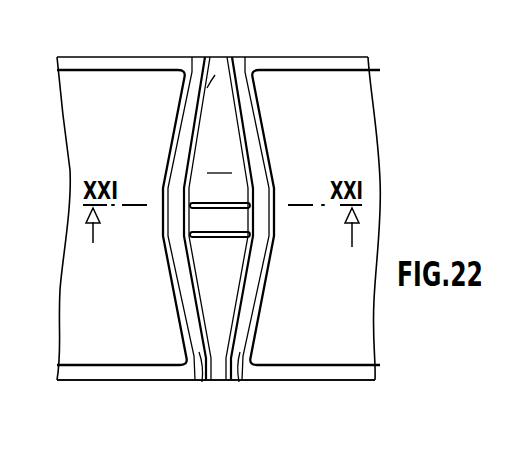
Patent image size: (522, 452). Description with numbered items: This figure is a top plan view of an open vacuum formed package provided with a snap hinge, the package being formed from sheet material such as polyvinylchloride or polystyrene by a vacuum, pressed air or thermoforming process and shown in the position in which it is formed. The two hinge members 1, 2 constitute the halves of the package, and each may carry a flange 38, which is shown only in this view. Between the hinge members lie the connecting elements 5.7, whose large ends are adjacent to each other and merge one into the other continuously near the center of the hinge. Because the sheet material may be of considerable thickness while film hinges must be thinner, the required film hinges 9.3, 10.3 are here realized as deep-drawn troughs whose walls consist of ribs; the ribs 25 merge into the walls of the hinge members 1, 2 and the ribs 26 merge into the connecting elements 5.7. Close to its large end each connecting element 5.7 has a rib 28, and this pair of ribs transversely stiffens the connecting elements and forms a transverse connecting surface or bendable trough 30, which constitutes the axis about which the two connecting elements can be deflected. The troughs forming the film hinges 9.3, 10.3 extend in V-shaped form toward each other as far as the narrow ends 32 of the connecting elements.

The hinge member 1 is at (128, 88).
The hinge member 2 is at (337, 82).
The rib 25 is at (263, 126).
The rib 26 is at (236, 72).
The narrow end 32 is at (215, 75).
The connecting element 5.7 is at (219, 161).
The rib 28 is at (236, 204).
The bendable trough 30 is at (242, 216).
The film hinge 9.3 is at (202, 382).
The film hinge 10.3 is at (239, 382).
The flange 38 is at (343, 373).